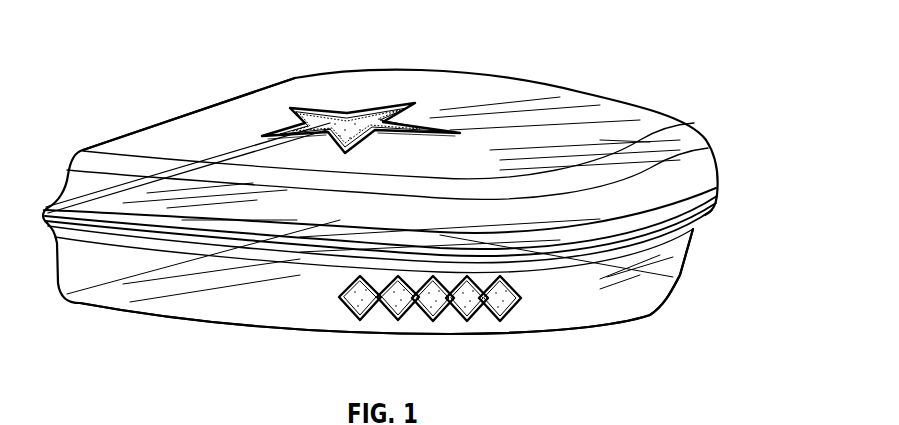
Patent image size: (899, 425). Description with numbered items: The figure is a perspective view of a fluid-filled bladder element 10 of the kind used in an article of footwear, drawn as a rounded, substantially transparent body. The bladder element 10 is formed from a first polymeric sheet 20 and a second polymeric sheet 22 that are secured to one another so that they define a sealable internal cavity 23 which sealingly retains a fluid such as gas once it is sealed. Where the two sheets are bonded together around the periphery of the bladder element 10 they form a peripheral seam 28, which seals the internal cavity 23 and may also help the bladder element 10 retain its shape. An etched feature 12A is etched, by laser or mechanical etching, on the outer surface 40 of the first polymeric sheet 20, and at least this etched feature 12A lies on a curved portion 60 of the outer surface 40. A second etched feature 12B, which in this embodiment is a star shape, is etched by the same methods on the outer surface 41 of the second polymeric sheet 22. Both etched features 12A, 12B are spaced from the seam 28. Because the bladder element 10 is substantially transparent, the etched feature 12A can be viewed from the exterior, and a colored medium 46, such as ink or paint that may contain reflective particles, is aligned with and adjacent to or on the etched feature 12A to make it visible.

The fluid-filled bladder element 10 is at (425, 67).
The etched feature 12A is at (345, 307).
The second etched feature 12B is at (362, 117).
The first polymeric sheet 20 is at (118, 299).
The second polymeric sheet 22 is at (178, 125).
The sealable internal cavity 23 is at (462, 161).
The peripheral seam 28 is at (715, 197).
The outer surface 40 is at (242, 309).
The outer surface 41 is at (259, 110).
The colored medium 46 is at (338, 117).
The curved portion 60 is at (553, 322).